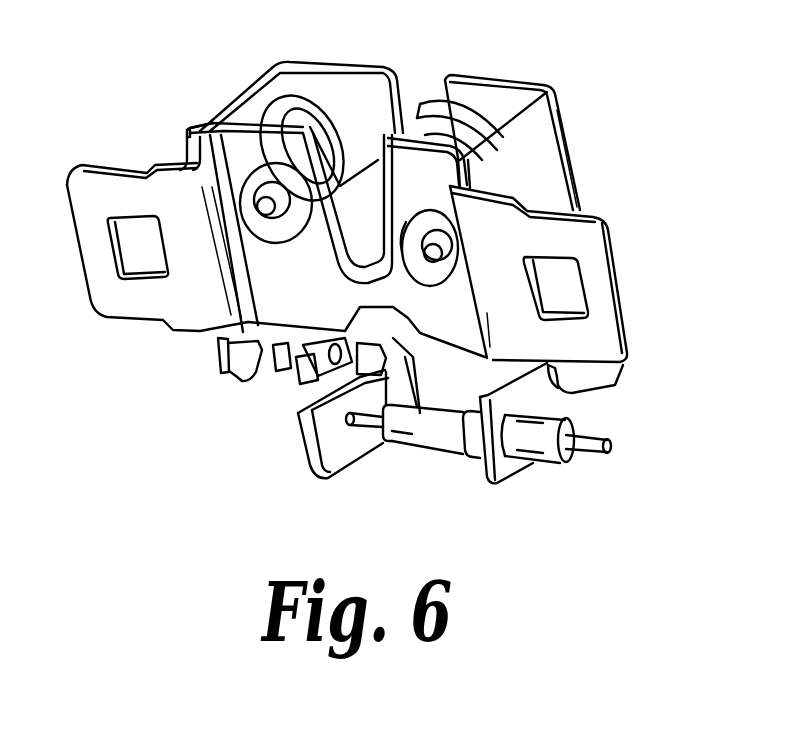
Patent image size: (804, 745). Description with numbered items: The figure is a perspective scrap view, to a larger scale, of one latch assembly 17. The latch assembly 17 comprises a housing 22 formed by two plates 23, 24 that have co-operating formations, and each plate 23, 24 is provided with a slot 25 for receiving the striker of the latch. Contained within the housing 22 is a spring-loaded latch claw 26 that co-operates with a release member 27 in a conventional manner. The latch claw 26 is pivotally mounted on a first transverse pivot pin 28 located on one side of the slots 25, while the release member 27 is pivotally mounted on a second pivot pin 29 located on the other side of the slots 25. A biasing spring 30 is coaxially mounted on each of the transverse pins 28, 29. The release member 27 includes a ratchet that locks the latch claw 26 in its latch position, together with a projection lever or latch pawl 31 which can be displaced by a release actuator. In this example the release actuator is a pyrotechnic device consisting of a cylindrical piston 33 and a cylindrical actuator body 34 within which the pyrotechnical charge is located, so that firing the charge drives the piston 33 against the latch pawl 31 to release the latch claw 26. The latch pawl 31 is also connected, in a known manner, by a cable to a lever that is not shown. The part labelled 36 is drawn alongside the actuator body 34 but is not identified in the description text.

The latch assembly 17 is at (641, 175).
The first upper strap 22 is at (342, 96).
The second upper strap 23 is at (532, 147).
The left mounting flange 24 is at (178, 288).
The slot 25 is at (406, 93).
The second spring 26 is at (448, 115).
The first spring 27 is at (298, 116).
The rivet 28 is at (446, 247).
The rivet 29 is at (267, 207).
The bend 30 is at (213, 123).
The lower bracket plate 31 is at (330, 450).
The pin 33 is at (369, 420).
The pivot cylinder 34 is at (436, 428).
The side plate 36 is at (508, 472).